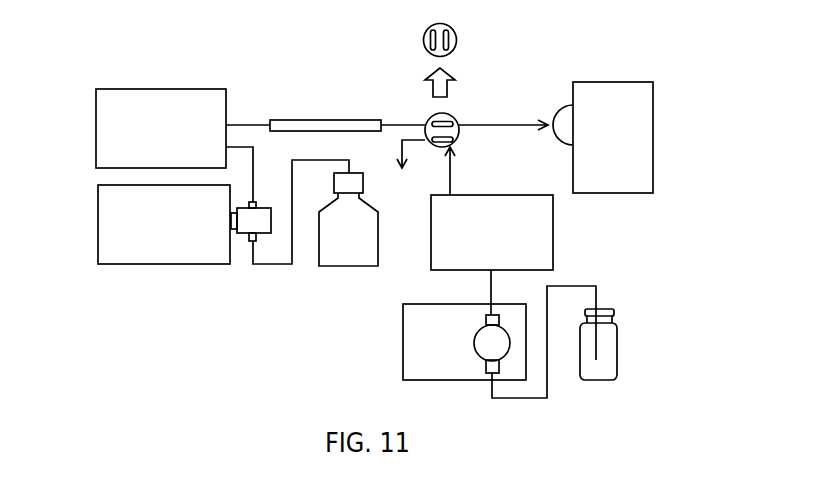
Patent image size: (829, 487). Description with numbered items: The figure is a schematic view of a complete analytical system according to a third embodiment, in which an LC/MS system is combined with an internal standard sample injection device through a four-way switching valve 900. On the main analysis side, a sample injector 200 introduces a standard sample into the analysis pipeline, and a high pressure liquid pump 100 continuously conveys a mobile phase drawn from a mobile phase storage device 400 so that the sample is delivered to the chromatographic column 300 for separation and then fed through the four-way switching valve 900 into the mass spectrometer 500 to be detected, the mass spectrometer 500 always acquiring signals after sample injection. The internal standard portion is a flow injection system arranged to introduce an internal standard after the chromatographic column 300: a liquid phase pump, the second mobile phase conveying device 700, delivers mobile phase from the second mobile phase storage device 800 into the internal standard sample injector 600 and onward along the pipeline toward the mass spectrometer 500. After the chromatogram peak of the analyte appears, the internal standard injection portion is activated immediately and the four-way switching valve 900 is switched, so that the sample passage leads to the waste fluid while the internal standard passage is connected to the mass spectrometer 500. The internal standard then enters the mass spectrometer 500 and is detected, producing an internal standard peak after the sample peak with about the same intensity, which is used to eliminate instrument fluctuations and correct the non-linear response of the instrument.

The high pressure liquid pump 100 is at (117, 238).
The sample injector 200 is at (113, 133).
The chromatographic column 300 is at (346, 127).
The mobile phase storage device 400 is at (332, 237).
The mass spectrometer 500 is at (632, 127).
The internal standard sample injector 600 is at (525, 232).
The second mobile phase conveying device 700 is at (423, 367).
The second mobile phase storage device 800 is at (605, 350).
The four-way switching valve 900 is at (458, 125).